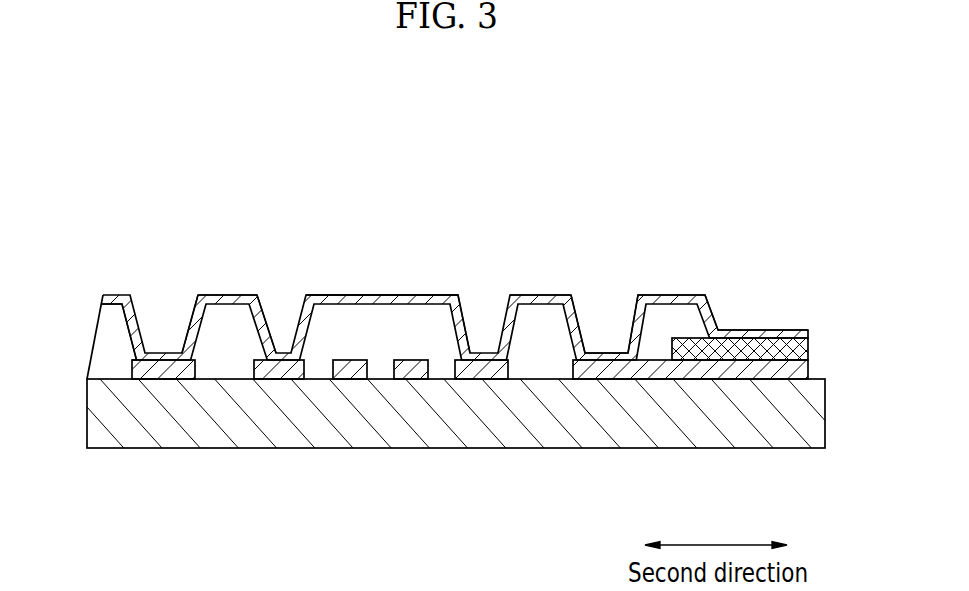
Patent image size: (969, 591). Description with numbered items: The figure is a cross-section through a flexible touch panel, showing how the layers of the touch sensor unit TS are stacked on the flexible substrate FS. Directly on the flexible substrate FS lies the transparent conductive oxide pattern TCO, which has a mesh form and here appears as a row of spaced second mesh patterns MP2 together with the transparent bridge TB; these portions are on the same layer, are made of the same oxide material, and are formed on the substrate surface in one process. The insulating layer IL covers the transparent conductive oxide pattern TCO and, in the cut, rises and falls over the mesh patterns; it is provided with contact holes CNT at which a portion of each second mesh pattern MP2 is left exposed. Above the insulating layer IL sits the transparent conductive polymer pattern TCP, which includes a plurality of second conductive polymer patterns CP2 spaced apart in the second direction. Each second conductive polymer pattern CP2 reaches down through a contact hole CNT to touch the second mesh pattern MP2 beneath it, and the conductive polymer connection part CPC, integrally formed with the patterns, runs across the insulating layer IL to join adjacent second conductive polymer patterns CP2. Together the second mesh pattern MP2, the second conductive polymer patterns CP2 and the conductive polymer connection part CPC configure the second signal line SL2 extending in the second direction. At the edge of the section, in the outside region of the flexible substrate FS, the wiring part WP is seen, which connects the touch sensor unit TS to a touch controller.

The flexible substrate FS is at (673, 440).
The second mesh pattern MP2 is at (262, 379).
The transparent bridge TB is at (355, 372).
The transparent conductive oxide pattern TCO is at (290, 394).
The wiring part WP is at (743, 338).
The insulating layer IL is at (100, 318).
The second signal line SL2 is at (318, 282).
The contact hole CNT is at (245, 323).
The second conductive polymer pattern CP2 is at (222, 293).
The conductive polymer connection part CPC is at (387, 295).
The transparent conductive polymer pattern TCP is at (438, 282).
The touch sensor unit TS is at (590, 287).